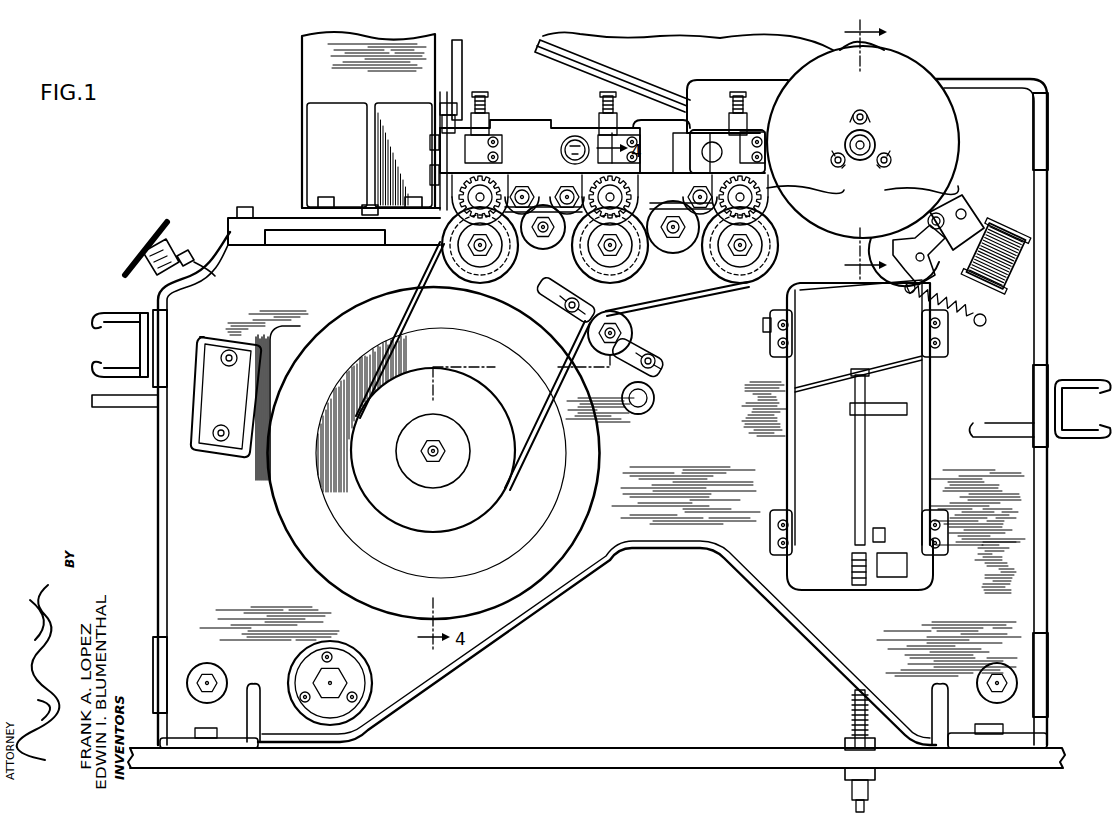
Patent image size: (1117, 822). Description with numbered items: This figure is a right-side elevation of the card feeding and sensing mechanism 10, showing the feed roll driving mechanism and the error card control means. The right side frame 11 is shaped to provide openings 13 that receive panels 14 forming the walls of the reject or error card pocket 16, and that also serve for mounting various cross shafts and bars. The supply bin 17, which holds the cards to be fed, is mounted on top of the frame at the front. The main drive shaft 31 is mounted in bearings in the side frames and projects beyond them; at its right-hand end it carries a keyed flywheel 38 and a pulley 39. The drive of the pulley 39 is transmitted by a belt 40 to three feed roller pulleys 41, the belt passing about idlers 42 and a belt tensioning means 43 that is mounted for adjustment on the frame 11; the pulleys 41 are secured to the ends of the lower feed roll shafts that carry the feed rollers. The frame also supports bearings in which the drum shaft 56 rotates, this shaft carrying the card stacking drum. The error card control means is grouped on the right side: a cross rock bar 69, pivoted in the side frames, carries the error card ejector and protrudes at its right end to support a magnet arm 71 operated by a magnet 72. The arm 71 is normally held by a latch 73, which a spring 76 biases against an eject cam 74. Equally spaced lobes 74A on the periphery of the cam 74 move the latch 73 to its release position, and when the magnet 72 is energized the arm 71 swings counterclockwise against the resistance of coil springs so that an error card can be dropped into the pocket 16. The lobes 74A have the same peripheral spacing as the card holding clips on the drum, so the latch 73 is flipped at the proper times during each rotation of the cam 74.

The card feeding and sensing mechanism 10 is at (155, 426).
The right side frame 11 is at (1020, 360).
The openings 13 is at (810, 437).
The panels 14 is at (800, 488).
The error card pocket 16 is at (835, 516).
The supply bin 17 is at (315, 88).
The main drive shaft 31 is at (447, 450).
The flywheel 38 is at (582, 470).
The pulley 39 is at (487, 497).
The belt 40 is at (435, 255).
The feed roller pulleys 41 is at (583, 255).
The idlers 42 is at (693, 240).
The belt tensioning means 43 is at (627, 323).
The drum shaft 56 is at (864, 145).
The cross rock bar 69 is at (961, 209).
The magnet arm 71 is at (975, 212).
The magnet 72 is at (1012, 250).
The latch 73 is at (903, 290).
The eject cam 74 is at (937, 125).
The lobes 74A is at (863, 194).
The spring 76 is at (970, 322).